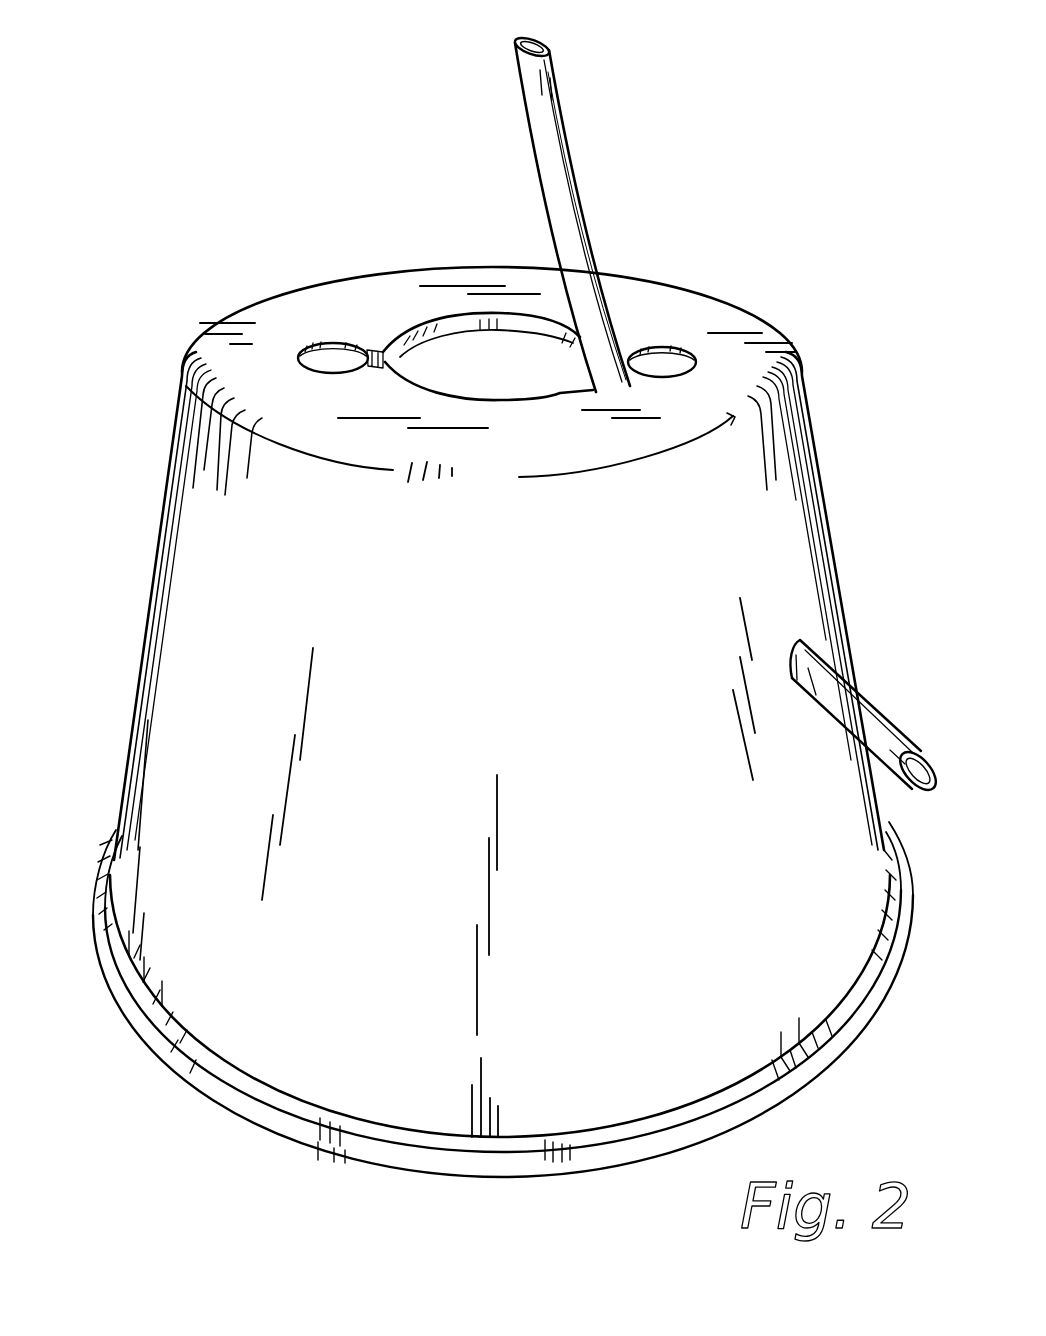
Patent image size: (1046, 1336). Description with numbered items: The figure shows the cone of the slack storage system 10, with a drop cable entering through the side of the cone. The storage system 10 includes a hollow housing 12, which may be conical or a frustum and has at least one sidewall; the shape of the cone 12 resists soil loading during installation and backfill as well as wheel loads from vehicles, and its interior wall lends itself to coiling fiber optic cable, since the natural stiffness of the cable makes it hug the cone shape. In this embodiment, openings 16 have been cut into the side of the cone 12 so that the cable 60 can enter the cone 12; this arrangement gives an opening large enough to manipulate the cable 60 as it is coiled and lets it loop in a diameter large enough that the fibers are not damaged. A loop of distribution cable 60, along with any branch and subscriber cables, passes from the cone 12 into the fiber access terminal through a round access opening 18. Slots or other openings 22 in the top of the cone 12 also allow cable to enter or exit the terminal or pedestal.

The storage system 10 is at (335, 214).
The hollow housing 12 is at (178, 593).
The openings 16 is at (592, 393).
The round access opening 18 is at (808, 642).
The slots or other openings 22 is at (322, 345).
The cable 60 is at (566, 171).